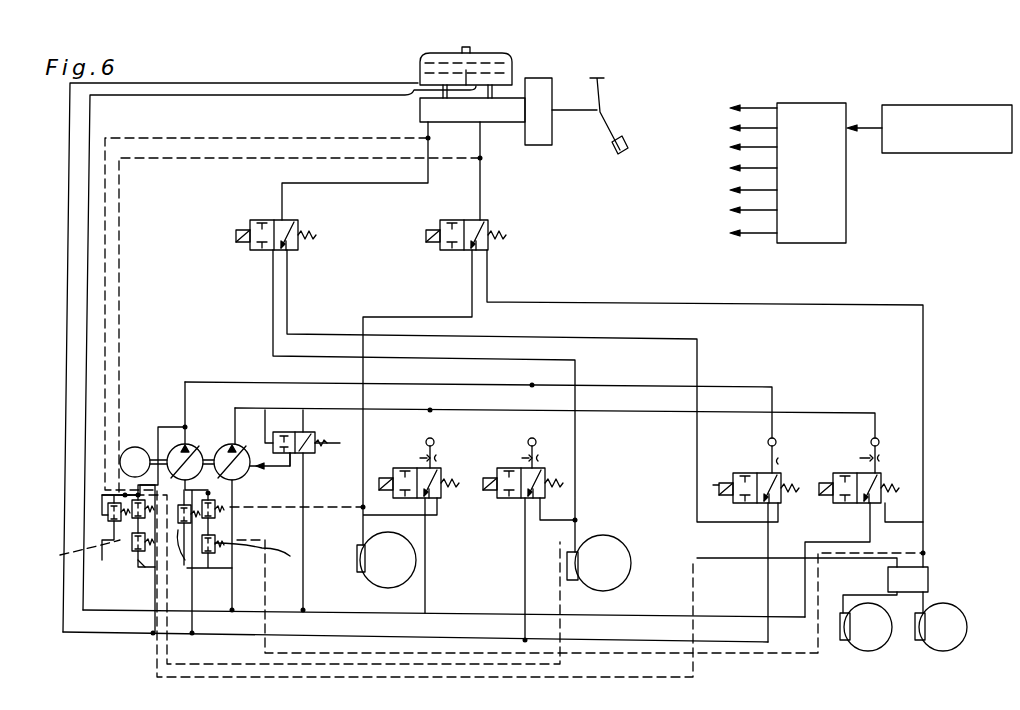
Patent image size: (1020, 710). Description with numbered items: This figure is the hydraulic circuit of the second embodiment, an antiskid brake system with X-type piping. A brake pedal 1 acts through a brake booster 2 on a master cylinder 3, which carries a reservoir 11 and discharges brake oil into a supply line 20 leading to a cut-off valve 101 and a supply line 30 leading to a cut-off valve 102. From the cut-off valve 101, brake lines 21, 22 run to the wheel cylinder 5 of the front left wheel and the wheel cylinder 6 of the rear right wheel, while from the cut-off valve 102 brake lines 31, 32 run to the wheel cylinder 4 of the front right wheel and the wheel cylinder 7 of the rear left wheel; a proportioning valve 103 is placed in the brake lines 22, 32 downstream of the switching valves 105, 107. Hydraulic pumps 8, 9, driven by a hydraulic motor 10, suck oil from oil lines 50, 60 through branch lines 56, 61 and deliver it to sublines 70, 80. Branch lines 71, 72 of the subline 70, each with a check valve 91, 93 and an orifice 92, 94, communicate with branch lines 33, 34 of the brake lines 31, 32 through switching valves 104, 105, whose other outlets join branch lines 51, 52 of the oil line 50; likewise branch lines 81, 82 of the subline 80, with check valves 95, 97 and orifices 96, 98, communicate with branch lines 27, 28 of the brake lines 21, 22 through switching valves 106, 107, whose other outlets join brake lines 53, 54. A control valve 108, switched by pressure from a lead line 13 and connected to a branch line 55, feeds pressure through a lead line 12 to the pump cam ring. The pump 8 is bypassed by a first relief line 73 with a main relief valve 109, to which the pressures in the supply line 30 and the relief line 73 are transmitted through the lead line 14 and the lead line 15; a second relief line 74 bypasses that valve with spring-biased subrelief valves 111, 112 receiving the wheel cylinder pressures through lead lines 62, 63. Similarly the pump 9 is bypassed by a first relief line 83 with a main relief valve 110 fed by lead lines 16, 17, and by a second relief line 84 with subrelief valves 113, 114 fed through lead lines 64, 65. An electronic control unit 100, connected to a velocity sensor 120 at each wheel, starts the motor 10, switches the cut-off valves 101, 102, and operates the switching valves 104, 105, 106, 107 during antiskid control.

The brake pedal 1 is at (622, 135).
The brake booster 2 is at (550, 133).
The master cylinder 3 is at (518, 100).
The wheel cylinder 4 is at (372, 588).
The wheel cylinder 5 is at (620, 586).
The wheel cylinder 6 is at (884, 645).
The wheel cylinder 7 is at (960, 645).
The hydraulic pump 8 is at (244, 475).
The hydraulic pump 9 is at (188, 444).
The hydraulic motor 10 is at (135, 446).
The reservoir 11 is at (500, 68).
The lead line 12 is at (290, 470).
The lead line 13 is at (268, 436).
The lead line 14 is at (121, 346).
The lead line 15 is at (186, 562).
The lead line 16 is at (107, 313).
The lead line 17 is at (70, 554).
The supply line 20 is at (428, 183).
The brake line 21 is at (578, 464).
The brake line 22 is at (690, 440).
The branch line 27 is at (550, 524).
The branch line 28 is at (728, 522).
The supply line 30 is at (480, 186).
The brake line 31 is at (362, 496).
The brake line 32 is at (912, 372).
The branch line 33 is at (440, 520).
The branch line 34 is at (898, 526).
The oil line 50 is at (332, 98).
The branch line 51 is at (430, 606).
The branch line 52 is at (804, 580).
The brake line 53 is at (524, 602).
The brake line 54 is at (762, 592).
The branch line 55 is at (312, 530).
The branch line 56 is at (232, 588).
The oil line 60 is at (332, 84).
The branch line 61 is at (150, 612).
The lead line 62 is at (262, 512).
The lead line 63 is at (266, 570).
The lead line 64 is at (172, 660).
The lead line 65 is at (156, 658).
The subline 70 is at (514, 412).
The branch line 71 is at (432, 428).
The branch line 72 is at (878, 420).
The first relief line 73 is at (330, 420).
The second relief line 74 is at (260, 555).
The subline 80 is at (474, 392).
The branch line 81 is at (536, 428).
The branch line 82 is at (774, 434).
The first relief line 83 is at (114, 572).
The second relief line 84 is at (138, 568).
The check valve 91 is at (426, 440).
The orifice 92 is at (418, 458).
The check valve 93 is at (871, 442).
The orifice 94 is at (855, 452).
The check valve 95 is at (556, 460).
The orifice 96 is at (520, 458).
The check valve 97 is at (777, 448).
The orifice 98 is at (779, 464).
The electronic control unit 100 is at (812, 106).
The cut-off valve 101 is at (265, 252).
The cut-off valve 102 is at (456, 252).
The proportioning valve 103 is at (926, 556).
The switching valve 104 is at (440, 474).
The switching valve 105 is at (842, 506).
The switching valve 106 is at (505, 502).
The switching valve 107 is at (737, 470).
The control valve 108 is at (318, 447).
The main relief valve 109 is at (184, 560).
The main relief valve 110 is at (106, 506).
The subrelief valve 111 is at (222, 512).
The subrelief valve 112 is at (222, 560).
The subrelief valve 113 is at (130, 512).
The subrelief valve 114 is at (130, 545).
The velocity sensor 120 is at (953, 106).